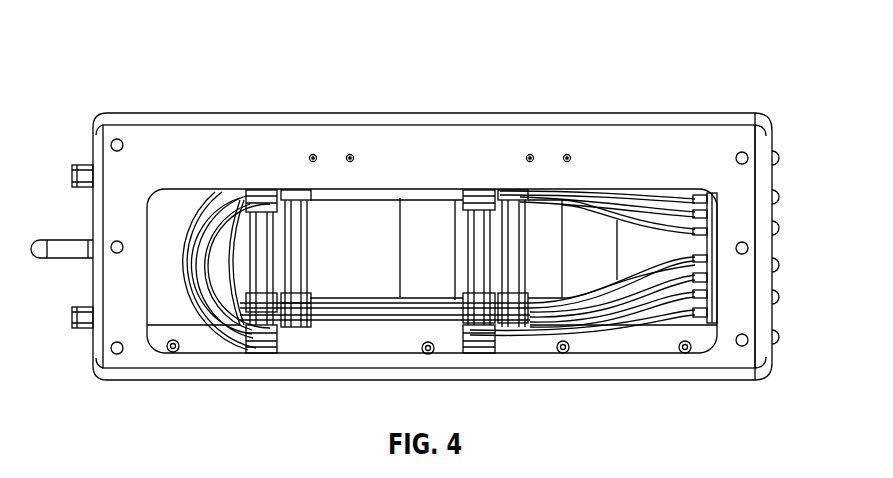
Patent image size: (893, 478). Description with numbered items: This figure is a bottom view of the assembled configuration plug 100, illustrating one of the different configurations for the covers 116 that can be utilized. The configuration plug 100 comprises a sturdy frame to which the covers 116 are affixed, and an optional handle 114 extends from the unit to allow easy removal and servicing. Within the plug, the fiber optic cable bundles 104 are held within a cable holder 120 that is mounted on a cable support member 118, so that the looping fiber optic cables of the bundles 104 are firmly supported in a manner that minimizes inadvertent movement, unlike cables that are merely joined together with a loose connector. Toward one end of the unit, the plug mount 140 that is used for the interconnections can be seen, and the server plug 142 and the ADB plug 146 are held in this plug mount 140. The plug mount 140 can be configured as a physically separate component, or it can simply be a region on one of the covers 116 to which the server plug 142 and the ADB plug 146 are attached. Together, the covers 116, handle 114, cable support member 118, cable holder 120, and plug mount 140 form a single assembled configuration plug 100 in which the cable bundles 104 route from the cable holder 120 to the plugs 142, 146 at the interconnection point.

The configuration plug 100 is at (733, 57).
The fiber optic cable bundles 104 is at (357, 300).
The handle 114 is at (33, 256).
The covers 116 is at (735, 182).
The cable support member 118 is at (300, 250).
The cable holder 120 is at (305, 295).
The plug mount 140 is at (713, 253).
The server plug 142 is at (717, 211).
The ADB plug 146 is at (715, 297).